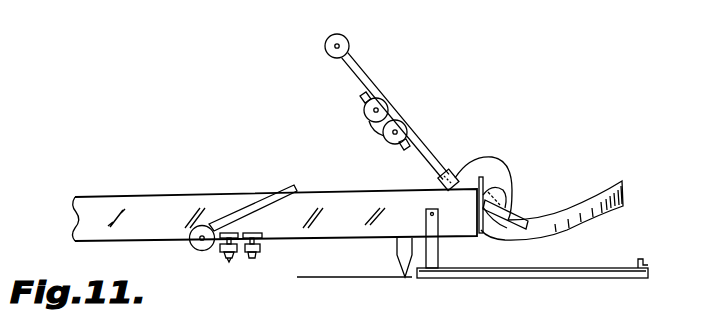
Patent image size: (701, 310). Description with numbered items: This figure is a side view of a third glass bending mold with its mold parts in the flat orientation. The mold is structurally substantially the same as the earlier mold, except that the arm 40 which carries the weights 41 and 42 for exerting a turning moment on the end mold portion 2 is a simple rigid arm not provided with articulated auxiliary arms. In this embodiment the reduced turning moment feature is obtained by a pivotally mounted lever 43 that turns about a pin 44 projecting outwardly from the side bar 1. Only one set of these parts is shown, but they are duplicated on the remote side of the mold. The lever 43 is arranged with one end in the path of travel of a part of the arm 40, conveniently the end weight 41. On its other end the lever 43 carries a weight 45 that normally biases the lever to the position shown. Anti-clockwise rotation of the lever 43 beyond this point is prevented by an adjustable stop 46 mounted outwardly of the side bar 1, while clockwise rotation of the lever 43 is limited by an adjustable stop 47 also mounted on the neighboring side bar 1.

The side bar 1 is at (143, 210).
The end mold portion 2 is at (597, 173).
The arm 40 is at (365, 76).
The end weight 41 is at (349, 46).
The weight 42 is at (372, 124).
The lever 43 is at (281, 188).
The pin 44 is at (236, 216).
The weight 45 is at (197, 250).
The adjustable stop 46 is at (229, 263).
The adjustable stop 47 is at (258, 246).